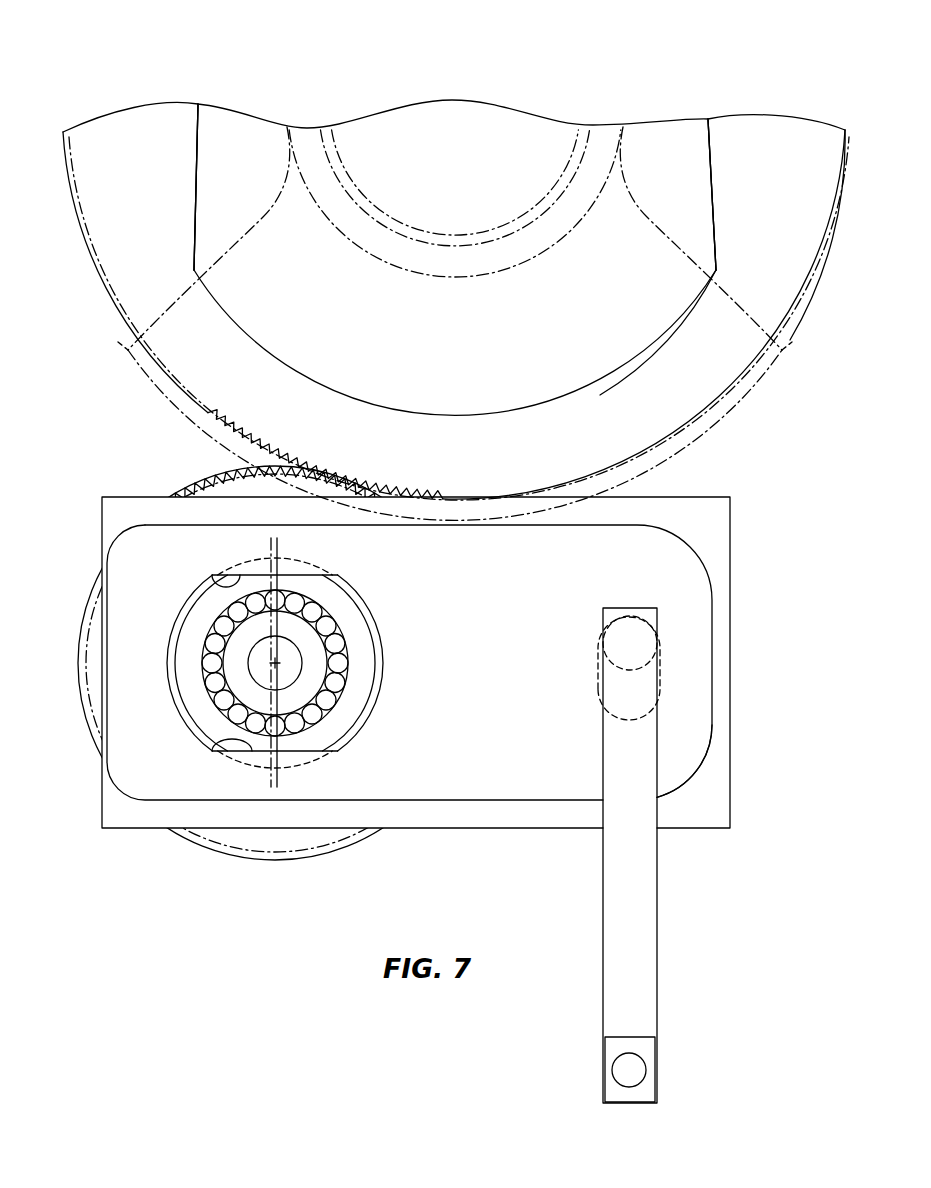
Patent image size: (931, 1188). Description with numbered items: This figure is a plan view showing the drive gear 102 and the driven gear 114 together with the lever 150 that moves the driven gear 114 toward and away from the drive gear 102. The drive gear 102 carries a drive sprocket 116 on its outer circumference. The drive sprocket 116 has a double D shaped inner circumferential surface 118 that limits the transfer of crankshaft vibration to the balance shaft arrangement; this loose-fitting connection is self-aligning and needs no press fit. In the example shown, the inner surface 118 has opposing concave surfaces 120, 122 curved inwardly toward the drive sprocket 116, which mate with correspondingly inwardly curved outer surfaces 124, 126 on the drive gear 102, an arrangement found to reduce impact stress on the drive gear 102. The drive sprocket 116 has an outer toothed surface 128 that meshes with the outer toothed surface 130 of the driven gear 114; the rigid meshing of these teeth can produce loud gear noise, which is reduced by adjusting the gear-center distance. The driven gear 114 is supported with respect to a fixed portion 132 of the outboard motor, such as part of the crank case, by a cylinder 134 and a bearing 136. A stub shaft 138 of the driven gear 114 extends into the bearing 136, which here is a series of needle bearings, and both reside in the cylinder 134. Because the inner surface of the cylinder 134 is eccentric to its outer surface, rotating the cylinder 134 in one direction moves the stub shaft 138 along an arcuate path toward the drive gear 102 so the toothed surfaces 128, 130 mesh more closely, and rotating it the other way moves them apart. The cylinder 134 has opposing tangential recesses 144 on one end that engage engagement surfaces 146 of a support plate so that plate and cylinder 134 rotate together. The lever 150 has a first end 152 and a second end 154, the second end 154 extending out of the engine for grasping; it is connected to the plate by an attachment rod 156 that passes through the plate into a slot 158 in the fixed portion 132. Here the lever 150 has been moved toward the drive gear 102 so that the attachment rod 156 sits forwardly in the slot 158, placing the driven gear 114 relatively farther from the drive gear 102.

The drive gear 102 is at (668, 146).
The driven gear 114 is at (83, 697).
The drive sprocket 116 is at (808, 153).
The inner circumferential surface 118 is at (713, 199).
The concave surface 120 is at (197, 122).
The concave surface 122 is at (711, 163).
The outer surface 124 is at (199, 201).
The outer surface 126 is at (711, 224).
The outer toothed surface 128 is at (218, 420).
The outer toothed surface 130 is at (233, 472).
The fixed portion 132 is at (731, 523).
The cylinder 134 is at (203, 708).
The bearing 136 is at (330, 697).
The stub shaft 138 is at (310, 643).
The tangential recesses 144 is at (293, 573).
The engagement surfaces 146 is at (207, 580).
The lever 150 is at (658, 913).
The first end 152 is at (633, 767).
The second end 154 is at (657, 1047).
The attachment rod 156 is at (632, 633).
The slot 158 is at (638, 712).